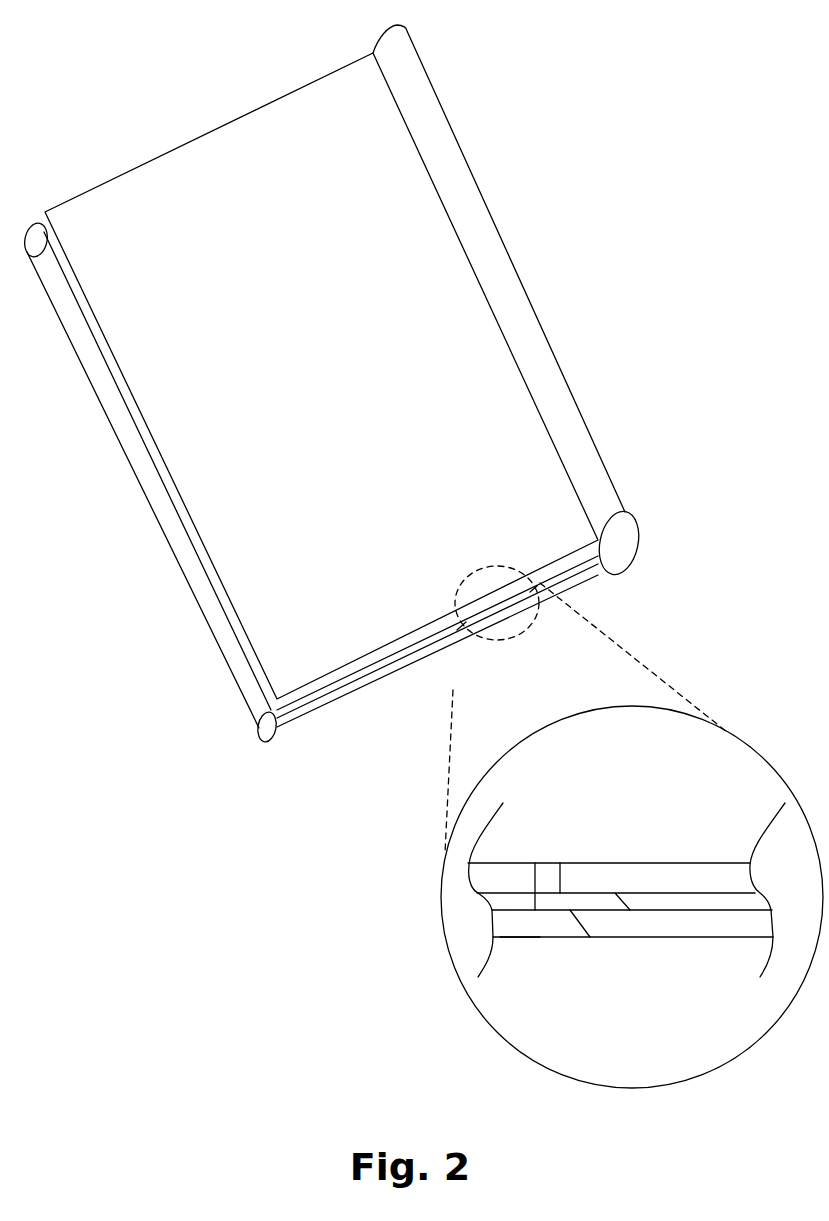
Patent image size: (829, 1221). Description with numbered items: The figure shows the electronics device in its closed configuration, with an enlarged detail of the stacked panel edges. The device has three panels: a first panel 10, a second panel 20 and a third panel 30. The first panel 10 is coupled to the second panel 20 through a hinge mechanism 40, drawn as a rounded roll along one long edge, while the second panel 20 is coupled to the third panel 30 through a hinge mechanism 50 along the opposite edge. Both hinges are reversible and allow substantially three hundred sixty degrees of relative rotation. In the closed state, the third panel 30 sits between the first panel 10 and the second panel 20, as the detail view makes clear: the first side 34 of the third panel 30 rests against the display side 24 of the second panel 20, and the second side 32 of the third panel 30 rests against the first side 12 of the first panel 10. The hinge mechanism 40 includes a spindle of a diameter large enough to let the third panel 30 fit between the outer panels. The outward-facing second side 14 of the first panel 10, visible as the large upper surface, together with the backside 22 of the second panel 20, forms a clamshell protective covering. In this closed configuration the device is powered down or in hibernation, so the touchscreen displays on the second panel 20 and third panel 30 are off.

The first panel 10 is at (408, 640).
The first side of the first panel 12 is at (573, 893).
The second side of the first panel 14 is at (199, 173).
The second panel 20 is at (403, 667).
The backside of the second panel 22 is at (520, 938).
The display side of the second panel 24 is at (582, 912).
The third panel 30 is at (313, 700).
The second side of the third panel 32 is at (622, 895).
The first side of the third panel 34 is at (535, 908).
The hinge mechanism 40 is at (623, 542).
The hinge mechanism 50 is at (268, 727).